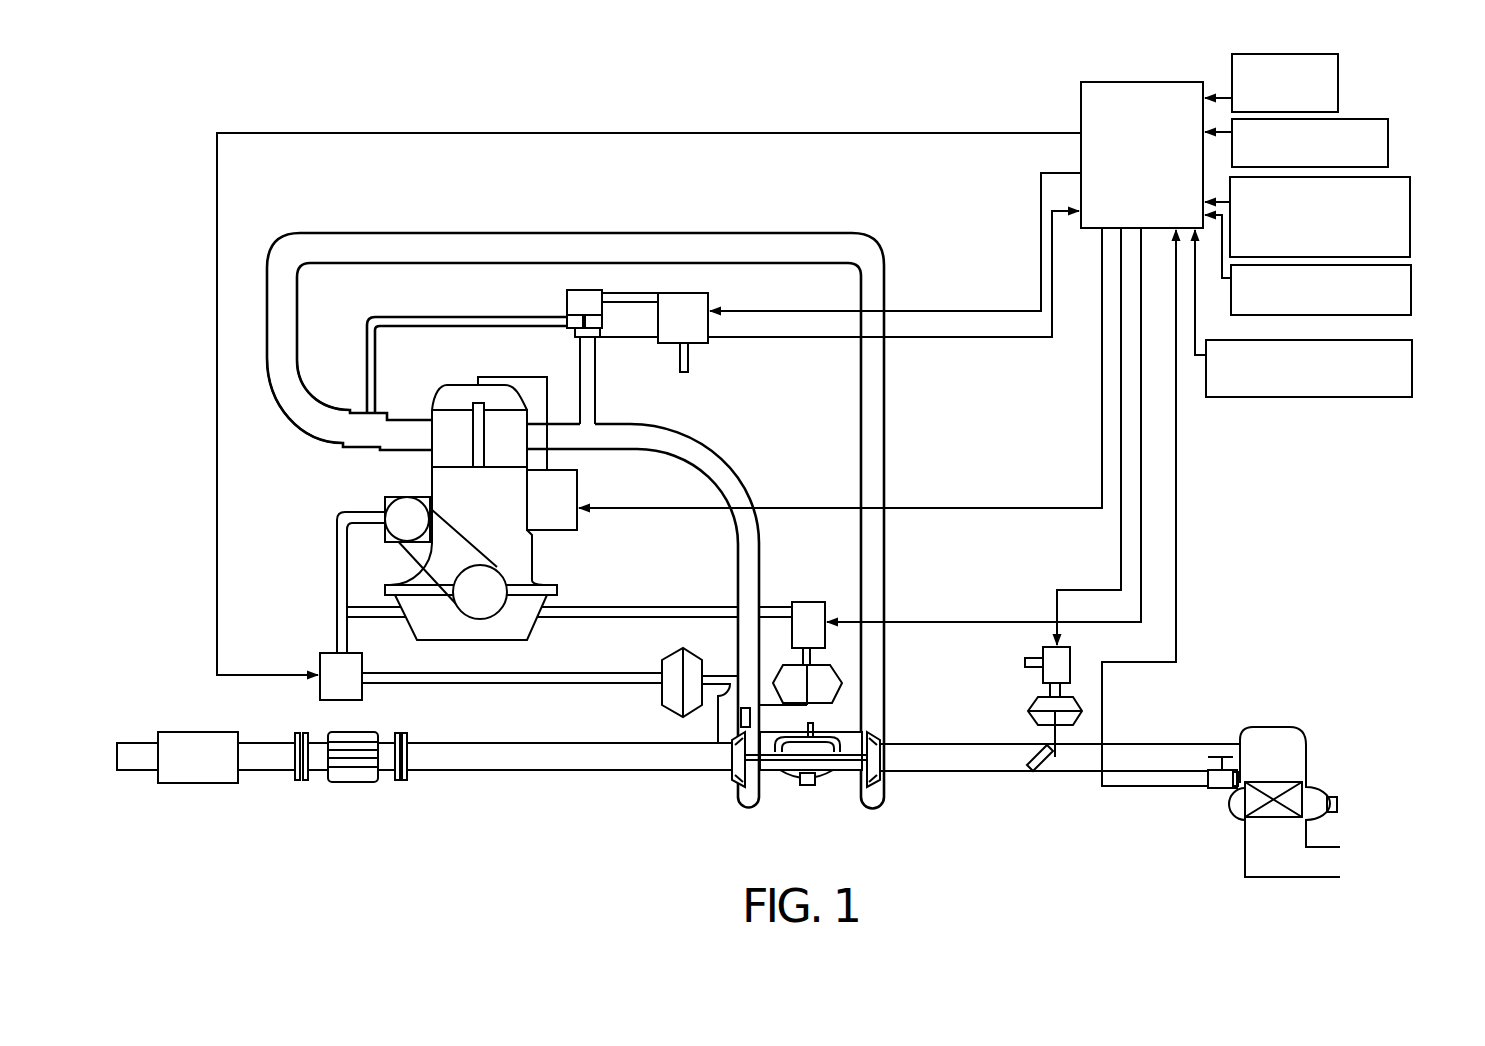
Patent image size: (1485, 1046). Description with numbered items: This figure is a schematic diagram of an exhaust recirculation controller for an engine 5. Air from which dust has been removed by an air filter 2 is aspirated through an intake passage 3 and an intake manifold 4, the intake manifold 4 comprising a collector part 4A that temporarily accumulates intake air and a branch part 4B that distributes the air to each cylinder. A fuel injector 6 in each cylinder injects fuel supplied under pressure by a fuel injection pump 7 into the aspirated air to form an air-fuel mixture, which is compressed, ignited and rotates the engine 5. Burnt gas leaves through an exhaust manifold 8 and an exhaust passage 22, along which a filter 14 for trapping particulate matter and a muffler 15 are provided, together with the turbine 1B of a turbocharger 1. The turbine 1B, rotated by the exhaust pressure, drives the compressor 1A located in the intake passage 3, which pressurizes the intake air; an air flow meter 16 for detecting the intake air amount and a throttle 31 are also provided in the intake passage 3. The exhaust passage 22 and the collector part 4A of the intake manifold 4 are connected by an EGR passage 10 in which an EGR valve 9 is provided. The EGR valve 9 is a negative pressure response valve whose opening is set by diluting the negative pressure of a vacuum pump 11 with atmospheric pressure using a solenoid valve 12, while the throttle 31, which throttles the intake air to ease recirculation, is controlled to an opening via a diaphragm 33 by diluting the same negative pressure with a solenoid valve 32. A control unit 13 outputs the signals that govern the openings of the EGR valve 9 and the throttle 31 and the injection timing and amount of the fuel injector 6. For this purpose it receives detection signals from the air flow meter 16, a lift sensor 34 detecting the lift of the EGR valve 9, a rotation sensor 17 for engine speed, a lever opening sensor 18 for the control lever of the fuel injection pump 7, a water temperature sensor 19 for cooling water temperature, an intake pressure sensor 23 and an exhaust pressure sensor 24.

The turbocharger 1 is at (790, 772).
The compressor 1A is at (885, 782).
The turbine 1B is at (733, 787).
The air filter 2 is at (1280, 782).
The intake passage 3 is at (1058, 772).
The intake manifold 4 is at (391, 407).
The collector part 4A is at (360, 438).
The branch part 4B is at (403, 440).
The engine 5 is at (557, 583).
The fuel injector 6 is at (470, 437).
The fuel injection pump 7 is at (560, 531).
The exhaust manifold 8 is at (613, 428).
The EGR valve 9 is at (567, 293).
The EGR passage 10 is at (452, 322).
The vacuum pump 11 is at (684, 374).
The solenoid valve 12 is at (708, 293).
The control unit 13 is at (1148, 82).
The filter 14 is at (352, 778).
The muffler 15 is at (192, 777).
The air flow meter 16 is at (1217, 790).
The rotation sensor 17 is at (1338, 92).
The lever opening sensor 18 is at (1388, 130).
The water temperature sensor 19 is at (1410, 195).
The exhaust passage 22 is at (605, 746).
The intake pressure sensor 23 is at (1411, 290).
The exhaust pressure sensor 24 is at (1323, 397).
The throttle 31 is at (1035, 773).
The solenoid valve 32 is at (1043, 652).
The diaphragm 33 is at (1028, 708).
The lift sensor 34 is at (600, 337).